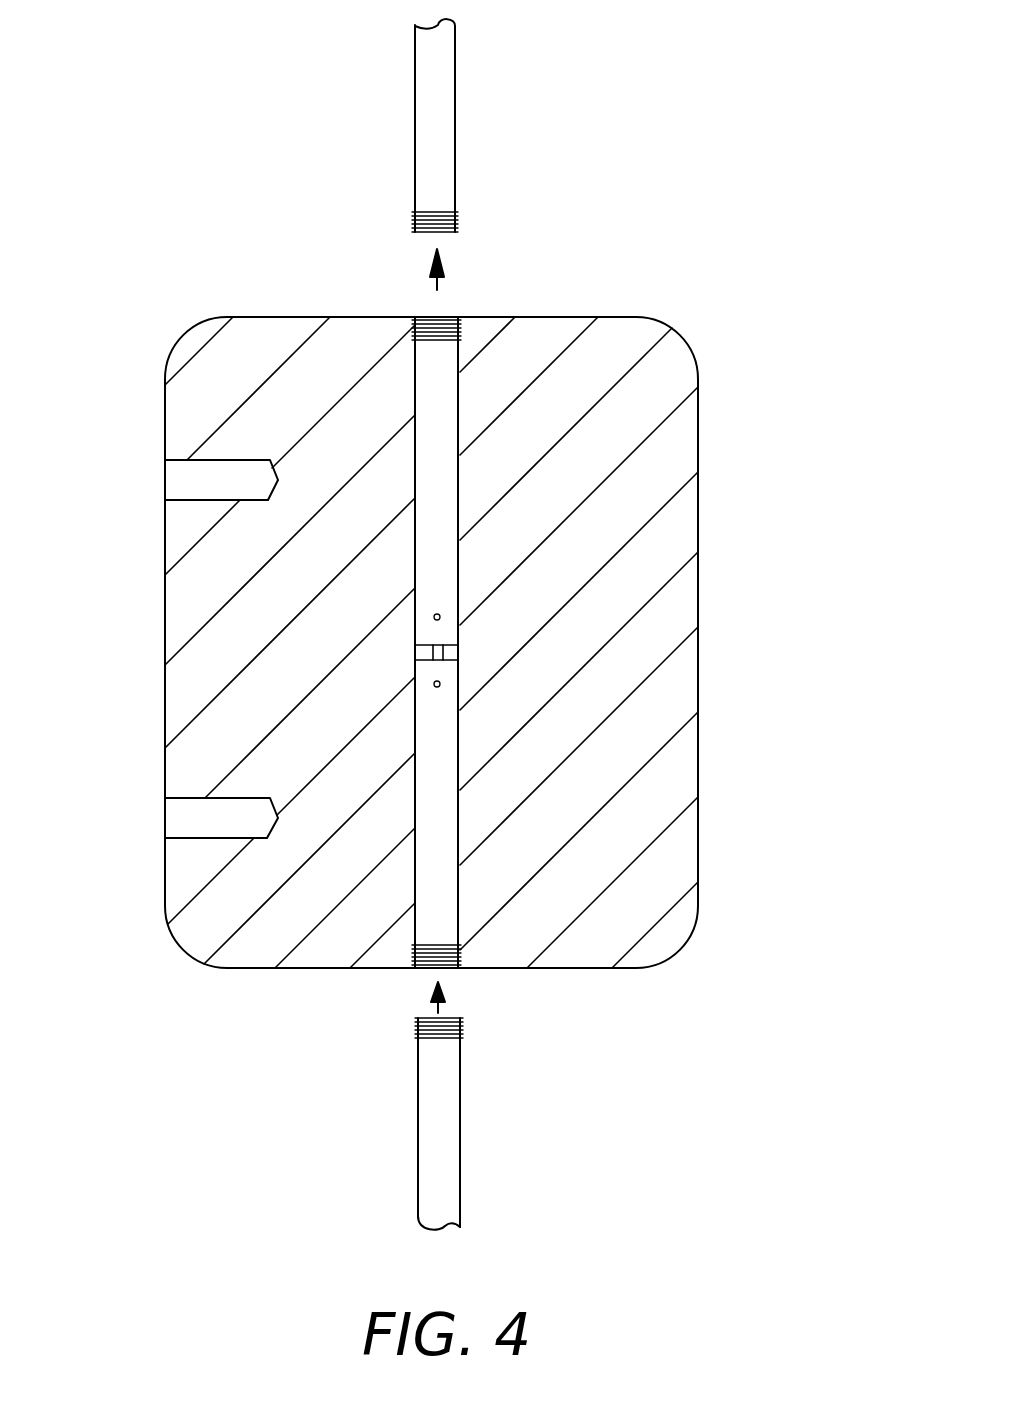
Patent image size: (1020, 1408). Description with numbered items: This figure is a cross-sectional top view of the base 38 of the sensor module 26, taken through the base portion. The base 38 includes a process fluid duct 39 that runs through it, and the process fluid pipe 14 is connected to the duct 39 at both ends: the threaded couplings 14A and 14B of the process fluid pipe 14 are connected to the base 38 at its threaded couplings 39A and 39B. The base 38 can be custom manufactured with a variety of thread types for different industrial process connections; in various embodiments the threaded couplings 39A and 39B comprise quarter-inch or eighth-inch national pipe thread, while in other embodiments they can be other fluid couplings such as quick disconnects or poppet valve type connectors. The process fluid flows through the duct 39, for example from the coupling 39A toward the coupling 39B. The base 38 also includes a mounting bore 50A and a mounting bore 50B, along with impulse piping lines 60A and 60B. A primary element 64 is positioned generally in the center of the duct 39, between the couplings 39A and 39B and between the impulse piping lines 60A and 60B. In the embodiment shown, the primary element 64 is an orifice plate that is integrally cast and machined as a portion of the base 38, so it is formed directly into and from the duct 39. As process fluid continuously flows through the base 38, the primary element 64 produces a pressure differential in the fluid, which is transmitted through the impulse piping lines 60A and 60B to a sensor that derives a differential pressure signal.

The process fluid pipe 14 is at (455, 92).
The threaded coupling 14A is at (458, 213).
The threaded coupling 14B is at (415, 1030).
The sensor module 26 is at (712, 172).
The base 38 is at (678, 942).
The process fluid duct 39 is at (423, 382).
The threaded coupling 39A is at (430, 968).
The threaded coupling 39B is at (442, 317).
The mounting bore 50A is at (188, 818).
The mounting bore 50B is at (192, 476).
The impulse piping line 60A is at (441, 686).
The impulse piping line 60B is at (441, 614).
The primary element 64 is at (383, 644).